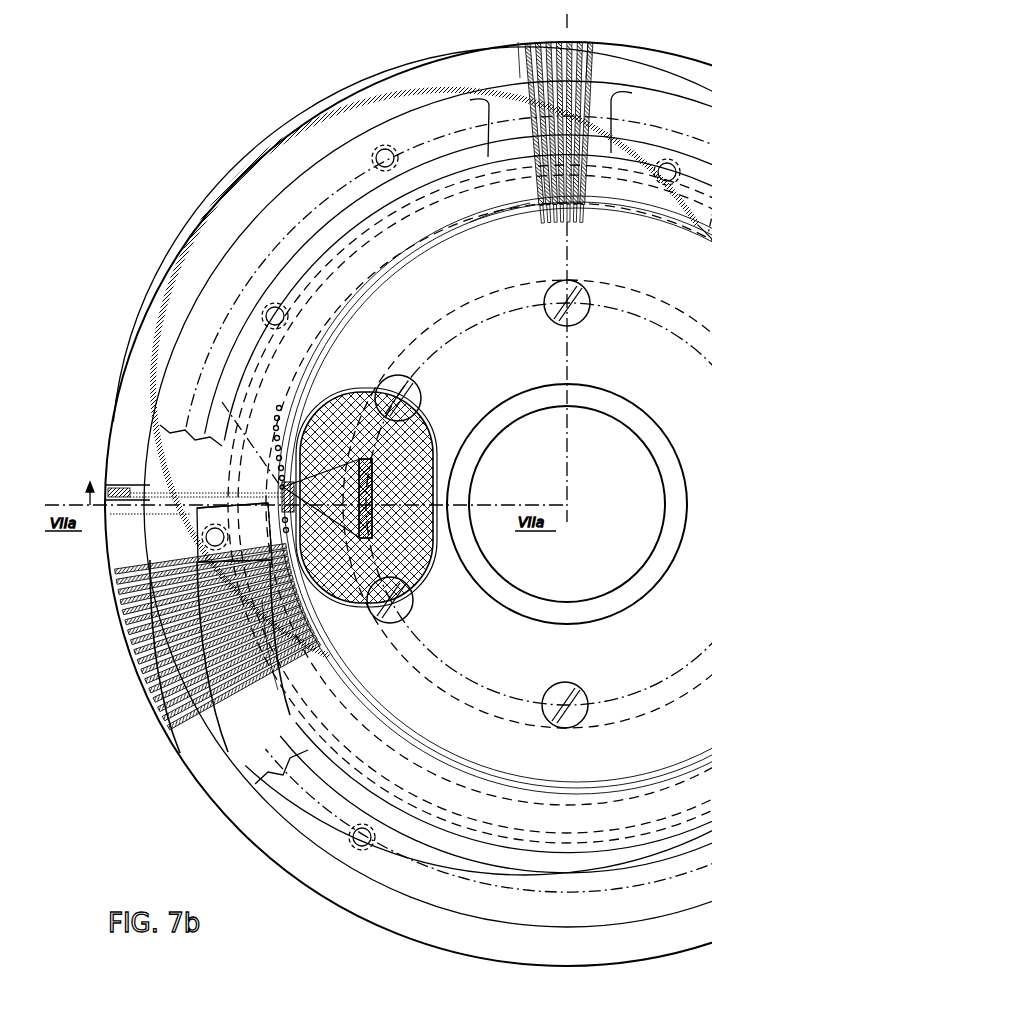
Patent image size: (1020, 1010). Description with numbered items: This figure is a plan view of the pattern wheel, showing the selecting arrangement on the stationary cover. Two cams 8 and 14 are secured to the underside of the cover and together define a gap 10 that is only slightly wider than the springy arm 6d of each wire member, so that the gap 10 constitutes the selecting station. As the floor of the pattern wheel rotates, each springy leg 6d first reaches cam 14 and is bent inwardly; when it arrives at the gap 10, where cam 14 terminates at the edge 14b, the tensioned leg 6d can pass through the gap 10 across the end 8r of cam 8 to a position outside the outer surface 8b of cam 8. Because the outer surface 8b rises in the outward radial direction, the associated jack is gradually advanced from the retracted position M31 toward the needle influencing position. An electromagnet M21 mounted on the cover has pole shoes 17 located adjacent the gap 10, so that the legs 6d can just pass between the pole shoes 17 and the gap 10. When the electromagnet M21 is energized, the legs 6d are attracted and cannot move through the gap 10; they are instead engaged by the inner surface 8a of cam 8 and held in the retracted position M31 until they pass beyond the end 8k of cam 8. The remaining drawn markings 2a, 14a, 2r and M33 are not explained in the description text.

The stator lamination segment 2a is at (520, 42).
The winding bundle M33 is at (538, 44).
The cam 8 is at (299, 375).
The inner surface of cam 8 8a is at (494, 228).
The outer surface of cam 8 8b is at (496, 209).
The end of cam 8 8k is at (706, 225).
The end of cam 8 8r is at (280, 486).
The arm of springy wire member 6d is at (280, 409).
The pole shoes 17 is at (366, 489).
The electromagnet M21 is at (420, 575).
The gap 10 is at (292, 513).
The cam 14 is at (265, 703).
The holder segment edge 14a is at (227, 559).
The end of cam 14 14b is at (268, 506).
The retracted position M31 is at (216, 503).
The rotor segment 2r is at (282, 678).